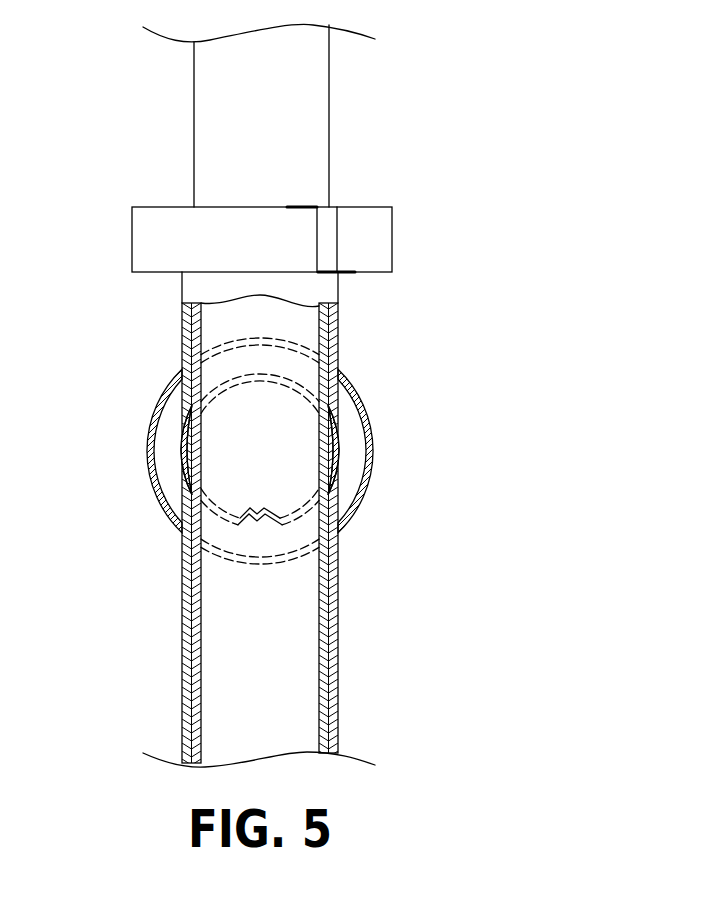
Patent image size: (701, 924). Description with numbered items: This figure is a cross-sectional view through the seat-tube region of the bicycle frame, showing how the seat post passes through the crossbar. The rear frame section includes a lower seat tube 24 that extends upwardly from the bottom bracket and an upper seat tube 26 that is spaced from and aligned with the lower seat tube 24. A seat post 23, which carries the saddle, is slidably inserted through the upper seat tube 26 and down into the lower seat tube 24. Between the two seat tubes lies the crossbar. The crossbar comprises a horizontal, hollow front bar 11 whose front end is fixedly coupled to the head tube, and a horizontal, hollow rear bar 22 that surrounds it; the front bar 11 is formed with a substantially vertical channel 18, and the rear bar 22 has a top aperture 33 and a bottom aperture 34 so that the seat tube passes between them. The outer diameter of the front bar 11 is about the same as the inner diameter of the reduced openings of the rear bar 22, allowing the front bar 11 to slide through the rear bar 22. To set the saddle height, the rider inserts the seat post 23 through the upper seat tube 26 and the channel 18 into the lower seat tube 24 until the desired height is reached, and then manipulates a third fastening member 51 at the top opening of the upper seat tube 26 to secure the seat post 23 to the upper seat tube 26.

The front bar 11 is at (340, 448).
The vertical channel 18 is at (300, 385).
The rear bar 22 is at (147, 448).
The seat post 23 is at (317, 135).
The lower seat tube 24 is at (182, 634).
The upper seat tube 26 is at (182, 325).
The top aperture 33 is at (292, 347).
The bottom aperture 34 is at (287, 558).
The third fastening member 51 is at (145, 235).